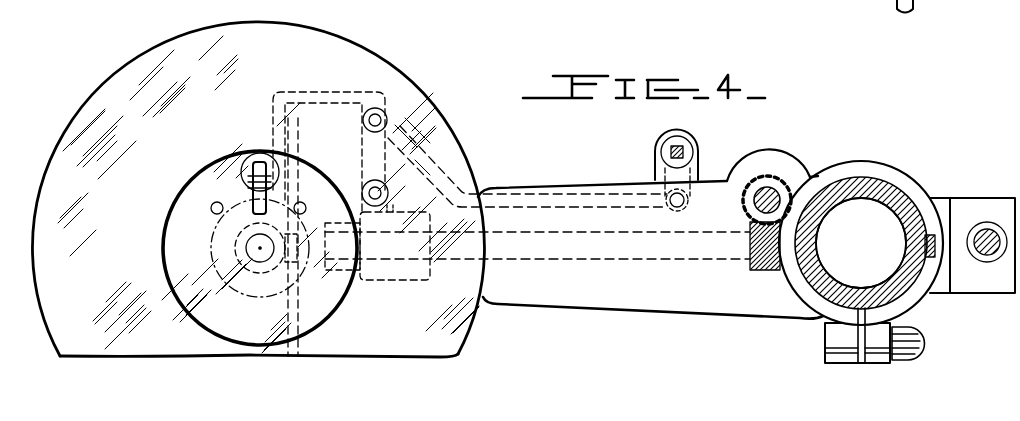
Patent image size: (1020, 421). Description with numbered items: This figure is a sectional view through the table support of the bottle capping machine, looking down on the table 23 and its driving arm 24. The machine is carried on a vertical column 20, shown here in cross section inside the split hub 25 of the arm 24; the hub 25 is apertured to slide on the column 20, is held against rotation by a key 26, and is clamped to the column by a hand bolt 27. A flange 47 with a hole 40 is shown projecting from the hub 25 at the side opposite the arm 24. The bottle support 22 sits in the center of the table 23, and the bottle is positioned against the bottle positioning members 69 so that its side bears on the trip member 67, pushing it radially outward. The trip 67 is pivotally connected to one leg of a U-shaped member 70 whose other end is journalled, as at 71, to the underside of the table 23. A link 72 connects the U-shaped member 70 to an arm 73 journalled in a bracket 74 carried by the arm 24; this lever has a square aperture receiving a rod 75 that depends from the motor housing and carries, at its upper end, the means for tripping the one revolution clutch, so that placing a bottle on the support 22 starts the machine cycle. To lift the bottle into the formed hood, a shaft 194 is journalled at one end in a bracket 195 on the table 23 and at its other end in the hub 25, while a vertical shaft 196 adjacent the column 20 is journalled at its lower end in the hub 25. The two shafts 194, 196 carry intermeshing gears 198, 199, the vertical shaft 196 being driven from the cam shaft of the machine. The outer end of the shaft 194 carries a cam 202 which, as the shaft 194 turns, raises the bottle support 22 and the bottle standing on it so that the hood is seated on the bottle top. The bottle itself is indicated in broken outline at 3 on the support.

The hub assembly 3 is at (249, 293).
The column 20 is at (808, 258).
The bottle support 22 is at (168, 213).
The table 23 is at (282, 30).
The arm 24 is at (651, 310).
The split hub 25 is at (892, 172).
The key 26 is at (958, 210).
The hand bolt 27 is at (917, 333).
The mounting hole 40 is at (987, 234).
The flange 47 is at (994, 290).
The trip member 67 is at (253, 226).
The bottle positioning members 69 is at (212, 207).
The U-shaped member 70 is at (331, 90).
The journal of U-shaped member 71 is at (387, 194).
The link 72 is at (514, 196).
The arm 73 is at (690, 192).
The bracket 74 is at (698, 166).
The rod 75 is at (686, 150).
The shaft 194 is at (554, 261).
The bracket 195 is at (432, 280).
The shaft 196 is at (772, 186).
The gear 198 is at (744, 212).
The gear 199 is at (762, 270).
The cam 202 is at (302, 347).